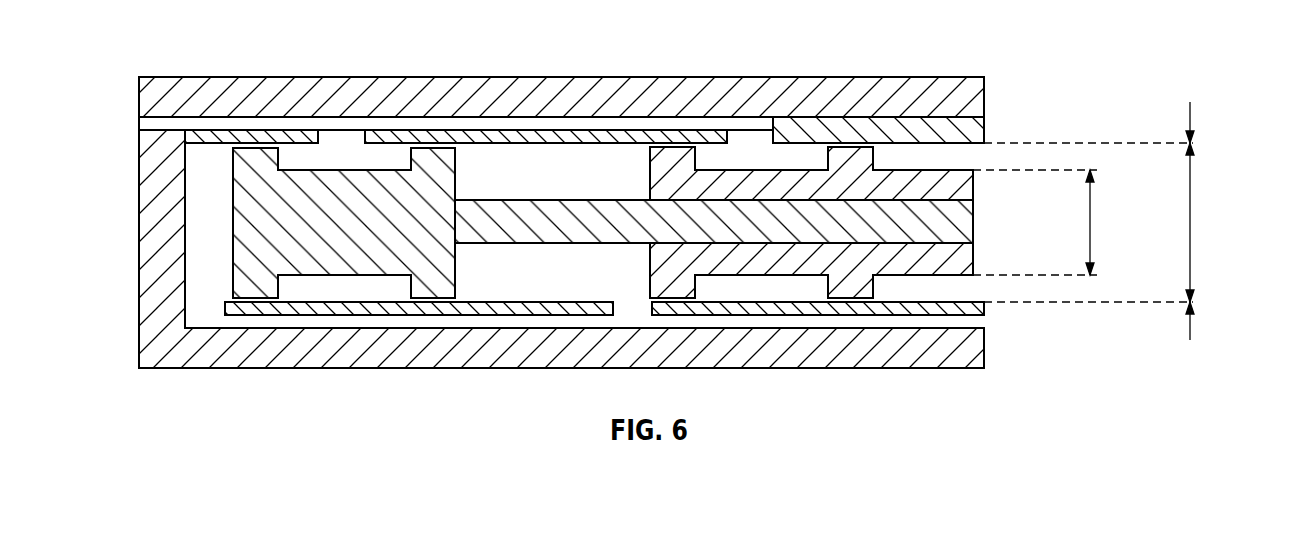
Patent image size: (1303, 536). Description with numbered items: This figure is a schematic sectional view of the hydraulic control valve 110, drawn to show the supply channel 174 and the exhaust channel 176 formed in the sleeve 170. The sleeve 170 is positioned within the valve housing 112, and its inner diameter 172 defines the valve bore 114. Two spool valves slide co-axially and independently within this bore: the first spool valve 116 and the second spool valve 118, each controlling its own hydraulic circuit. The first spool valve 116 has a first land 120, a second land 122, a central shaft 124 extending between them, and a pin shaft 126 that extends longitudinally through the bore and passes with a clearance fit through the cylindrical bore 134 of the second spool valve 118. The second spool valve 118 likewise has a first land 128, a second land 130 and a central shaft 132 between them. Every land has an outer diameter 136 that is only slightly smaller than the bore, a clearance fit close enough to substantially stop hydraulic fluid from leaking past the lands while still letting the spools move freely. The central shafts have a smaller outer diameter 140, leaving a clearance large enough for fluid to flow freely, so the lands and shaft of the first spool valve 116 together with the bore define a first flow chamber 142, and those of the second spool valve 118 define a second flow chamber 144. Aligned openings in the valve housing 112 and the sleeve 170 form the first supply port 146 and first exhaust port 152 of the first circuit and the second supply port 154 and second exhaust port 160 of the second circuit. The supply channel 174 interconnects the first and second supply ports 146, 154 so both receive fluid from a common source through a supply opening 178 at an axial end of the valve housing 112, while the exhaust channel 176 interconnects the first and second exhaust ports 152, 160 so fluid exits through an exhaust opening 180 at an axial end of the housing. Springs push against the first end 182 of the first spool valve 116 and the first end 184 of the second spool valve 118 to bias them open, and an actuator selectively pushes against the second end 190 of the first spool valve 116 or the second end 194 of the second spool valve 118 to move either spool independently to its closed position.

The hydraulic control valve 110 is at (256, 388).
The valve housing 112 is at (170, 307).
The valve bore 114 is at (546, 143).
The first spool valve 116 is at (233, 277).
The second spool valve 118 is at (780, 275).
The first land 120 is at (257, 162).
The second land 122 is at (432, 167).
The central shaft 124 is at (358, 253).
The pin shaft 126 is at (585, 222).
The first land 128 is at (682, 155).
The second land 130 is at (850, 153).
The central shaft 132 is at (757, 175).
The cylindrical bore 134 is at (950, 198).
The outer diameter 136 is at (1193, 122).
The outer diameter 140 is at (1093, 223).
The first flow chamber 142 is at (318, 282).
The second flow chamber 144 is at (812, 282).
The first supply port 146 is at (340, 140).
The first exhaust port 152 is at (212, 306).
The second supply port 154 is at (757, 130).
The second exhaust port 160 is at (620, 308).
The sleeve 170 is at (955, 135).
The inner diameter 172 is at (1195, 223).
The supply channel 174 is at (473, 125).
The exhaust channel 176 is at (812, 320).
The supply opening 178 is at (148, 125).
The exhaust opening 180 is at (948, 321).
The first end 182 is at (233, 242).
The first end 184 is at (650, 268).
The second end 190 is at (960, 225).
The second end 194 is at (968, 265).